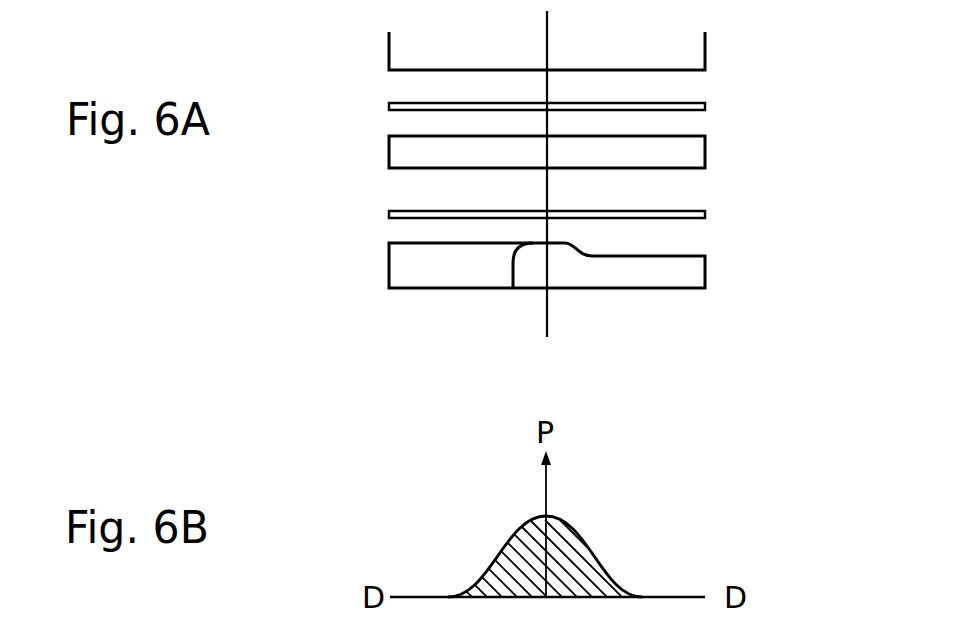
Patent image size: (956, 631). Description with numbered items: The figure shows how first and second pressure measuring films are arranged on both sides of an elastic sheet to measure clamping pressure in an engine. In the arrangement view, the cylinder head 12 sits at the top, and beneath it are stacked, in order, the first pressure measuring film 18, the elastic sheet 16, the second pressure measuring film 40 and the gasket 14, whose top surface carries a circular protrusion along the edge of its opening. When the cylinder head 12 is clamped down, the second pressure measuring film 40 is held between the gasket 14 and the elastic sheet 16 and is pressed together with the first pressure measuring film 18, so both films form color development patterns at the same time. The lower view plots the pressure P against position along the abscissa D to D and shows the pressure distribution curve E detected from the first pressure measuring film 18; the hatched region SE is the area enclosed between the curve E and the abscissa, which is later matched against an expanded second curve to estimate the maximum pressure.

In FIG. 6A, the cylinder head 12 is at (705, 56).
In FIG. 6A, the first pressure measuring film 18 is at (705, 107).
In FIG. 6A, the elastic sheet 16 is at (705, 152).
In FIG. 6A, the second pressure measuring film 40 is at (705, 213).
In FIG. 6A, the gasket 14 is at (705, 272).
In FIG. 6B, the area surrounded by the first pressure distribution curve and abscissa SE is at (583, 553).
In FIG. 6B, the first pressure distribution curve E is at (610, 568).